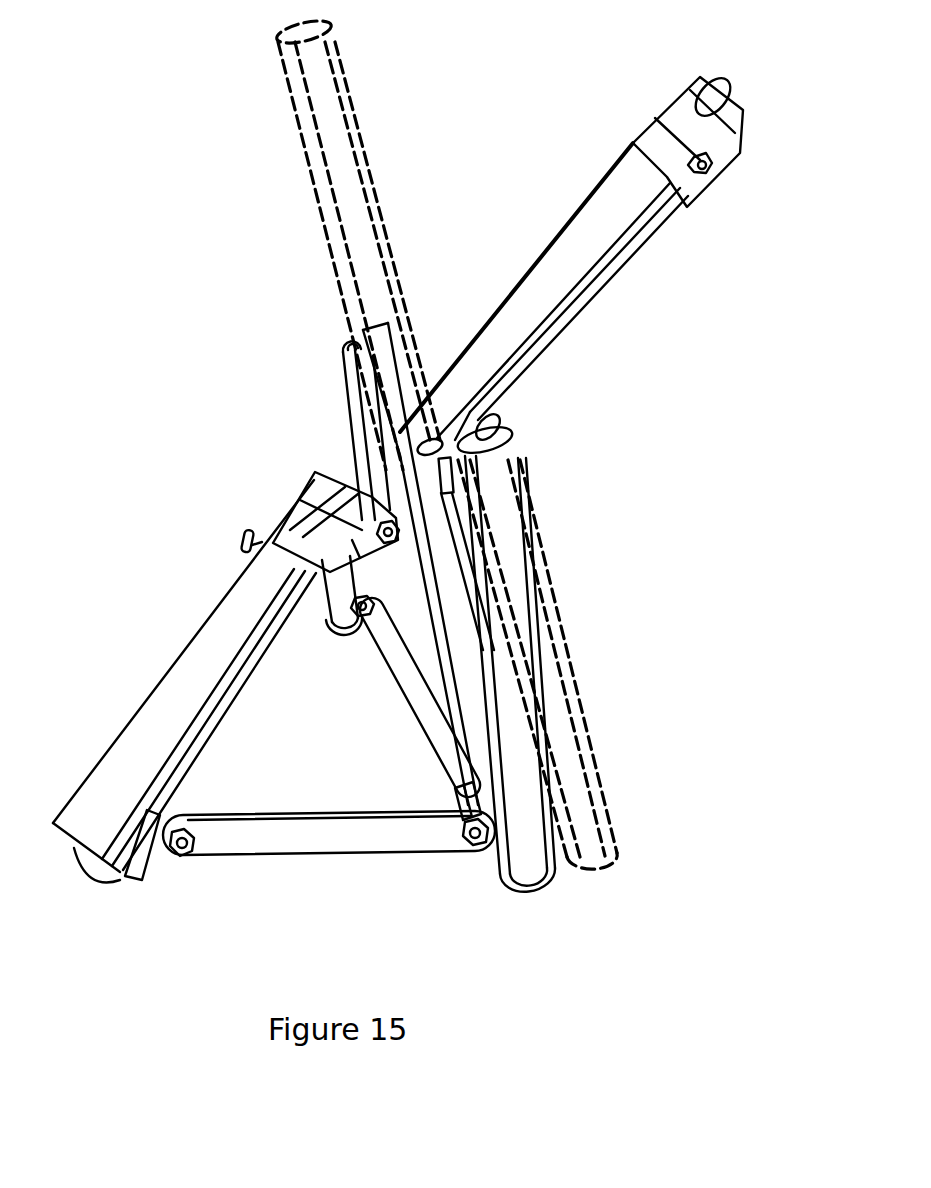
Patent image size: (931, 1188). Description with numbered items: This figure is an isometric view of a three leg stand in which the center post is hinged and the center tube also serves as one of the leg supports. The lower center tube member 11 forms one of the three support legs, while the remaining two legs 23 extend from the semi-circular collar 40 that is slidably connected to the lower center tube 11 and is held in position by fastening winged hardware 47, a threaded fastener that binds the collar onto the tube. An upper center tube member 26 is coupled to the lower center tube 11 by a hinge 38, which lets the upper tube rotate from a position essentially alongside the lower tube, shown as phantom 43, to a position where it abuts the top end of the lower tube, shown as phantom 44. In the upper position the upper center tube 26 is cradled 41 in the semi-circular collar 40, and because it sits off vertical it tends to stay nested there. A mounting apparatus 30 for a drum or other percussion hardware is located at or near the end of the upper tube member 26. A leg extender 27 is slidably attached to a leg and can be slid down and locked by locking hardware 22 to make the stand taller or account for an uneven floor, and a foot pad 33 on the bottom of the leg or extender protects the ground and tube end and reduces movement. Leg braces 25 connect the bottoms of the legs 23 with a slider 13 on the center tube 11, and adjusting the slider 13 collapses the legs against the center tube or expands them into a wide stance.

The lower center tube member 11 is at (497, 873).
The slider 13 is at (340, 637).
The locking hardware 22 is at (241, 543).
The legs 23 is at (307, 485).
The leg braces 25 is at (403, 713).
The upper center tube member 26 is at (597, 300).
The leg extender 27 is at (155, 702).
The mounting apparatus 30 is at (745, 176).
The foot pad 33 is at (550, 887).
The hinge 38 is at (487, 413).
The semi-circular collar 40 is at (348, 348).
The cradle 41 is at (383, 342).
The phantom (upper tube alongside lower tube) 43 is at (567, 652).
The phantom (upper tube atop lower tube) 44 is at (348, 95).
The fastening winged hardware 47 is at (342, 458).